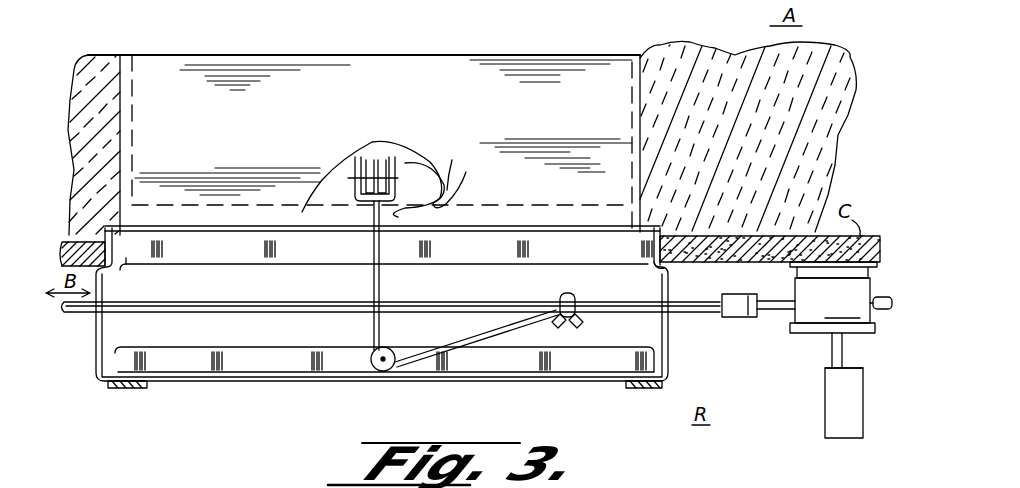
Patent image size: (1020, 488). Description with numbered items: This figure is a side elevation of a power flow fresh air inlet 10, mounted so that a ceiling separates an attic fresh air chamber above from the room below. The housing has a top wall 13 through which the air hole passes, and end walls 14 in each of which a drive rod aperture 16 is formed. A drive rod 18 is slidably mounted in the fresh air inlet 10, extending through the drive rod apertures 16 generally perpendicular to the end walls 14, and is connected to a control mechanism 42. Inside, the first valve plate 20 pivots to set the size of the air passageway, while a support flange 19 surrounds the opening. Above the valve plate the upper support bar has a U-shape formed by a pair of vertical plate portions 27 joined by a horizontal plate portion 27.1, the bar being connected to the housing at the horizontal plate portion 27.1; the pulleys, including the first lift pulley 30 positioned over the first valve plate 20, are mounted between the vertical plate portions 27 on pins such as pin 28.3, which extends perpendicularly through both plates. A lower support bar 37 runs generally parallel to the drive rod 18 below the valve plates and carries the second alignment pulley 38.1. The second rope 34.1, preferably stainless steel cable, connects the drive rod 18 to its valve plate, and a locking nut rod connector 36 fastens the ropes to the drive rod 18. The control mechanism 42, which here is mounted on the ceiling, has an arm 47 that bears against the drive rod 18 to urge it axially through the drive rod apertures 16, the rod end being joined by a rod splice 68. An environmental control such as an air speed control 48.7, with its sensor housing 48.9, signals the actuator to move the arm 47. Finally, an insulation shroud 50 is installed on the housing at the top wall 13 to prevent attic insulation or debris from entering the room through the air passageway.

The power flow fresh air inlet 10 is at (712, 213).
The top wall 13 is at (661, 162).
The end wall 14 is at (96, 356).
The drive rod aperture 16 is at (673, 297).
The drive rod 18 is at (290, 316).
The support flange 19 is at (183, 258).
The first valve plate 20 is at (150, 260).
The vertical plate portion 27 is at (392, 160).
The horizontal plate portion 27.1 is at (452, 160).
The pin 28.3 is at (463, 220).
The first lift pulley 30 is at (348, 158).
The second rope 34.1 is at (473, 347).
The locking nut rod connector 36 is at (567, 327).
The lower support bar 37 is at (334, 358).
The second alignment pulley 38.1 is at (386, 369).
The control mechanism 42 is at (823, 350).
The arm 47 is at (887, 313).
The air speed control 48.7 is at (847, 418).
The control box top 48.9 is at (837, 405).
The insulation shroud 50 is at (635, 123).
The rod splice 68 is at (743, 305).